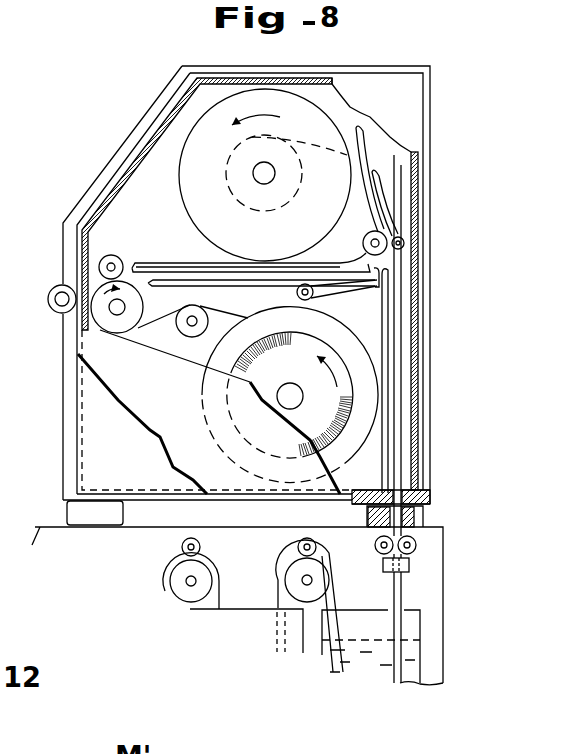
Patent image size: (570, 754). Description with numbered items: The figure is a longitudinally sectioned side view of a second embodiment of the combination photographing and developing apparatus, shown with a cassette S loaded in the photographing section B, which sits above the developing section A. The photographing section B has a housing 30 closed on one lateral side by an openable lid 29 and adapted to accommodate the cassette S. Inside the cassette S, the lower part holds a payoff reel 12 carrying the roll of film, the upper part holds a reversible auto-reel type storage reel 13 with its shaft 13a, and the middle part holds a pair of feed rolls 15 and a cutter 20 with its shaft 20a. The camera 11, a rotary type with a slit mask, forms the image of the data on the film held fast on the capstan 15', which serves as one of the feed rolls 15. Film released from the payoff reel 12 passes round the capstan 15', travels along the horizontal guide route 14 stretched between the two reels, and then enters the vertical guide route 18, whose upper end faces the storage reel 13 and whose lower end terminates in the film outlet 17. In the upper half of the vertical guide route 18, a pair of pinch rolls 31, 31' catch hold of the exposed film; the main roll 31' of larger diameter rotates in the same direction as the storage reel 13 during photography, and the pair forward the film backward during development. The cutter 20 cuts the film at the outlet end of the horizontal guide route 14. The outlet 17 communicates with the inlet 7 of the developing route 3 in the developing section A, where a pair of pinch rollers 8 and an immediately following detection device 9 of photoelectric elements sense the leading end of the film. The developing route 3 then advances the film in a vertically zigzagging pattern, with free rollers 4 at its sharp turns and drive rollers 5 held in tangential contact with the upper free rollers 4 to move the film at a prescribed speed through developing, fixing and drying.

The developing route 3 is at (395, 629).
The free rollers 4 is at (172, 578).
The drive rollers 5 is at (297, 545).
The inlet 7 is at (414, 534).
The pinch rollers 8 is at (397, 548).
The detection device 9 is at (411, 564).
The camera 11 is at (58, 296).
The payoff reel 12 is at (220, 357).
The storage reel 13 is at (205, 138).
The shaft of the storage reel 13a is at (265, 184).
The horizontal guide route 14 is at (176, 266).
The feed rollers 15 is at (123, 237).
The capstan 15' is at (75, 326).
The film outlet 17 is at (393, 490).
The vertical guide route 18 is at (382, 170).
The cutter 20 is at (375, 291).
The shaft of the cutter 20a is at (296, 293).
The openable lid 29 is at (93, 432).
The housing 30 is at (127, 160).
The pinch roll 31 is at (433, 230).
The main roll 31' is at (356, 247).
The developing section A is at (449, 686).
The photographing section B is at (56, 400).
The cassette S is at (188, 443).